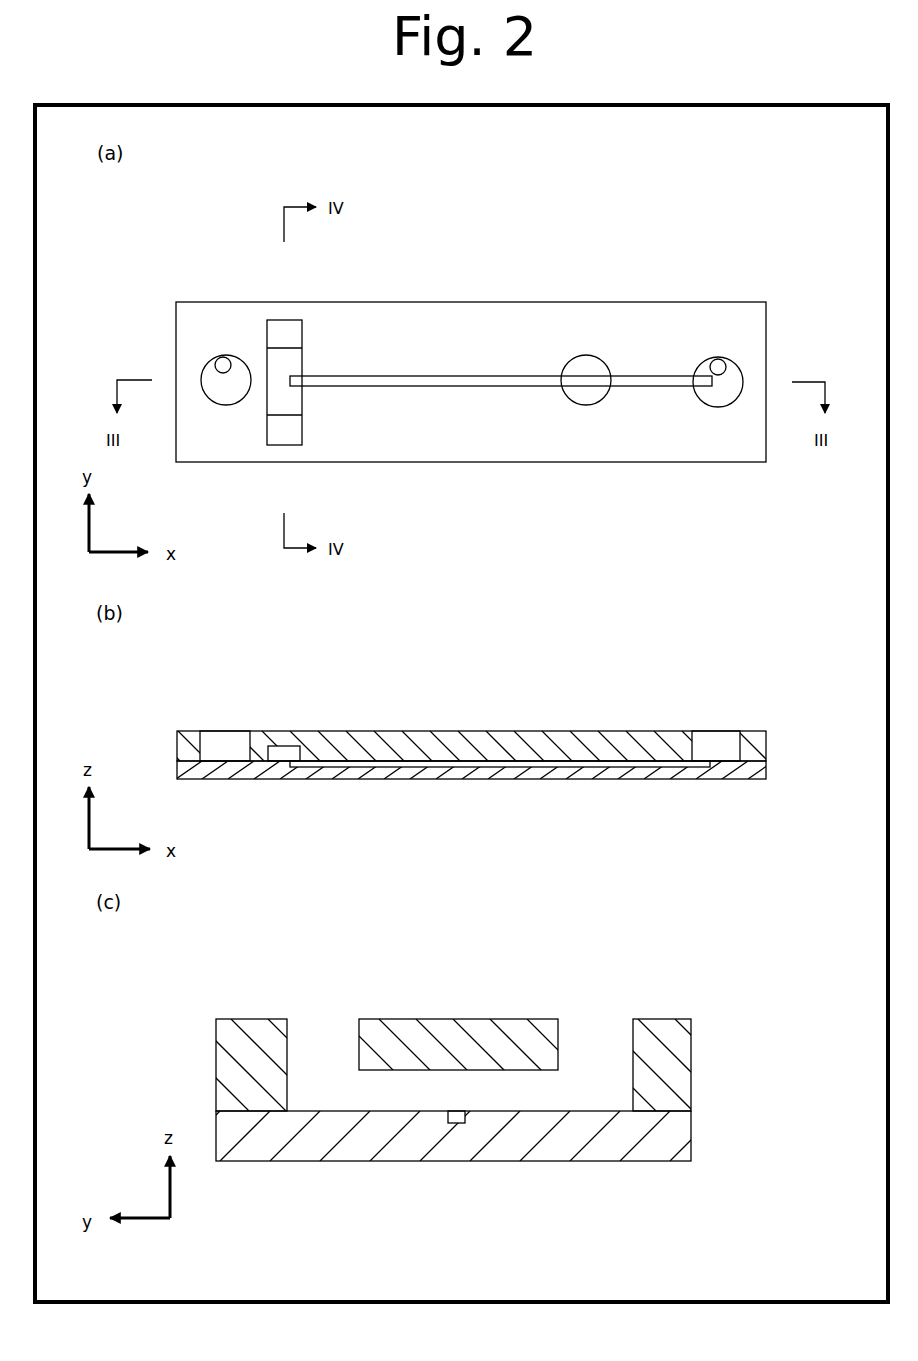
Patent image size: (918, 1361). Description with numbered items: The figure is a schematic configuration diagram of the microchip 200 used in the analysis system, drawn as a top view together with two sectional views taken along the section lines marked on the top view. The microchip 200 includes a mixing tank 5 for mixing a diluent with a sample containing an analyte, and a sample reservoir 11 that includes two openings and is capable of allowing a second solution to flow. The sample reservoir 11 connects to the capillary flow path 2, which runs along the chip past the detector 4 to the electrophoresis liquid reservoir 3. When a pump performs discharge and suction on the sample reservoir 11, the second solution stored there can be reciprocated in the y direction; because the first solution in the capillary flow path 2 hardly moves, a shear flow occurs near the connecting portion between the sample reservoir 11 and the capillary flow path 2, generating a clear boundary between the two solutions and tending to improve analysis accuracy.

The microchip 200 is at (170, 292).
The capillary flow path 2 is at (486, 387).
The electrophoresis liquid reservoir 3 is at (713, 359).
The detector 4 is at (586, 406).
The mixing tank 5 is at (223, 357).
The sample reservoir 11 is at (305, 350).